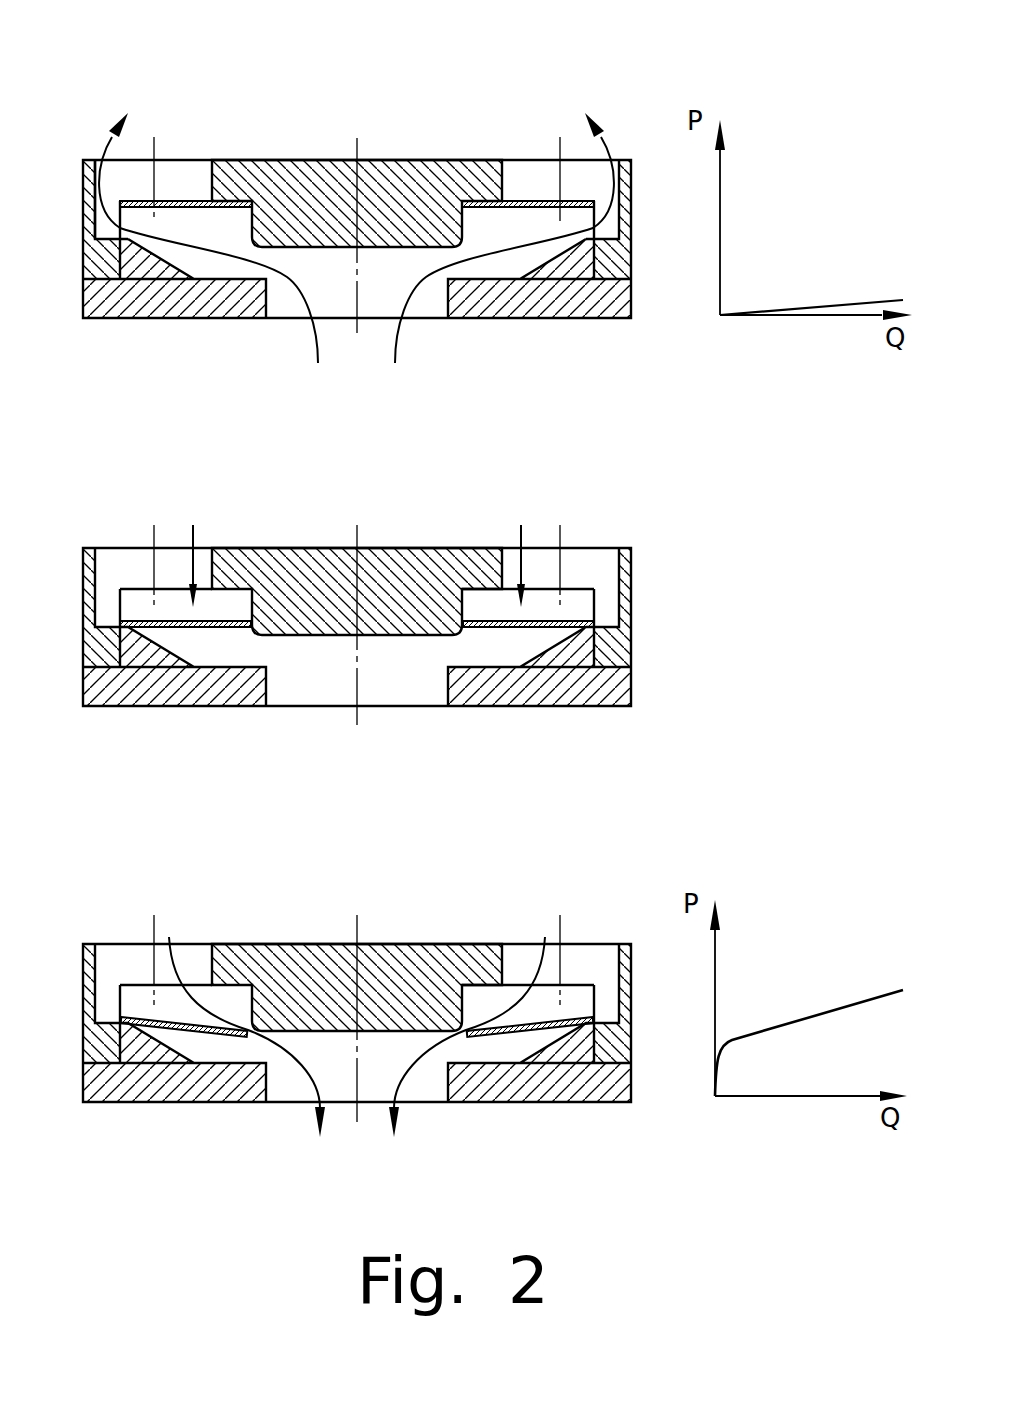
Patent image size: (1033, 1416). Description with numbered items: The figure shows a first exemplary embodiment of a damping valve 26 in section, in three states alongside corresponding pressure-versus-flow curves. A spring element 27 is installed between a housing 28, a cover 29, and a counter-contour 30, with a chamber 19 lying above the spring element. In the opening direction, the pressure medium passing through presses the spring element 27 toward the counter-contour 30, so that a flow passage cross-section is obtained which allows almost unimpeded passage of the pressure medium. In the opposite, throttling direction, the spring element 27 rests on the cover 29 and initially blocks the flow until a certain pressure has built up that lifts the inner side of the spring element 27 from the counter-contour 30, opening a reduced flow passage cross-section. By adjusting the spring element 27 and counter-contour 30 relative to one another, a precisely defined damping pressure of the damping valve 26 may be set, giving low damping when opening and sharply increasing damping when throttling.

The pressure chamber 19 is at (178, 172).
The damping valve 26 is at (85, 103).
The spring element 27 is at (523, 200).
The housing 28 is at (615, 255).
The cover 29 is at (615, 303).
The counter-contour 30 is at (310, 178).